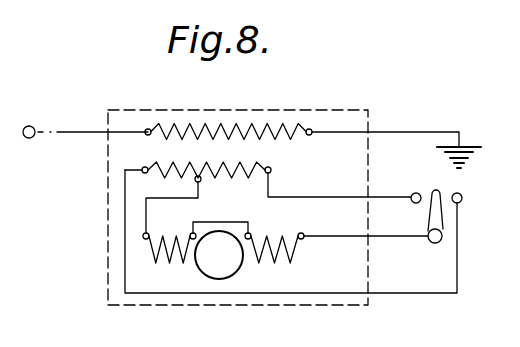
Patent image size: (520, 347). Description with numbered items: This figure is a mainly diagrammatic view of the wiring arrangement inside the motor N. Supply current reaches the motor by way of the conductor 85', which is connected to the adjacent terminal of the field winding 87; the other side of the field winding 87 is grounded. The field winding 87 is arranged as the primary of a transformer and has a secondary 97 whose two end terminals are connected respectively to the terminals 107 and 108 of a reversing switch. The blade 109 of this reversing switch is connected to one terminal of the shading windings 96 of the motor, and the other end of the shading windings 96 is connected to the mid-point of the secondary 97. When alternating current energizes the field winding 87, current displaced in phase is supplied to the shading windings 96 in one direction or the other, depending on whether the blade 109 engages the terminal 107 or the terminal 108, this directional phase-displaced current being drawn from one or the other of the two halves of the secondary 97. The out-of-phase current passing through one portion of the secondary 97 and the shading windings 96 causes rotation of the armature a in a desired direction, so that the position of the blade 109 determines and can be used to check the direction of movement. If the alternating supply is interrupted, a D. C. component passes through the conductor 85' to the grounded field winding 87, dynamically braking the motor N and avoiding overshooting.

The conductor 85' is at (85, 115).
The field winding 87 is at (213, 122).
The secondary winding 97 is at (225, 180).
The shading windings 96 is at (274, 265).
The armature a is at (203, 273).
The terminal of reversing switch 107 is at (421, 179).
The terminal of reversing switch 108 is at (463, 194).
The blade of reversing switch 109 is at (443, 223).
The motor N is at (352, 97).